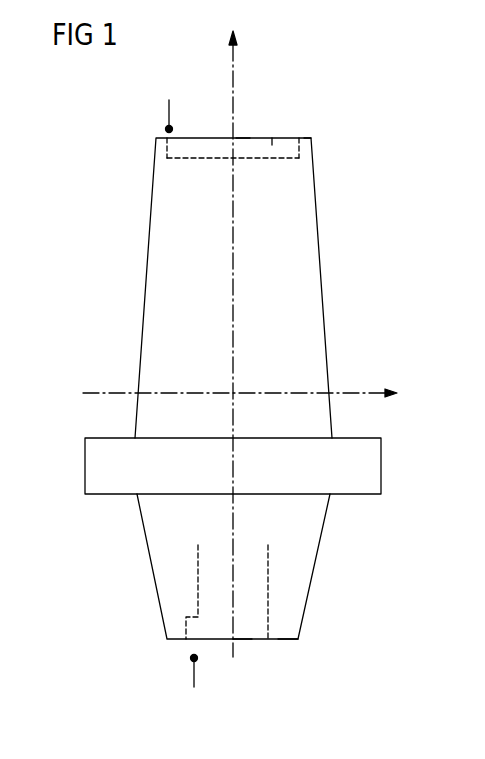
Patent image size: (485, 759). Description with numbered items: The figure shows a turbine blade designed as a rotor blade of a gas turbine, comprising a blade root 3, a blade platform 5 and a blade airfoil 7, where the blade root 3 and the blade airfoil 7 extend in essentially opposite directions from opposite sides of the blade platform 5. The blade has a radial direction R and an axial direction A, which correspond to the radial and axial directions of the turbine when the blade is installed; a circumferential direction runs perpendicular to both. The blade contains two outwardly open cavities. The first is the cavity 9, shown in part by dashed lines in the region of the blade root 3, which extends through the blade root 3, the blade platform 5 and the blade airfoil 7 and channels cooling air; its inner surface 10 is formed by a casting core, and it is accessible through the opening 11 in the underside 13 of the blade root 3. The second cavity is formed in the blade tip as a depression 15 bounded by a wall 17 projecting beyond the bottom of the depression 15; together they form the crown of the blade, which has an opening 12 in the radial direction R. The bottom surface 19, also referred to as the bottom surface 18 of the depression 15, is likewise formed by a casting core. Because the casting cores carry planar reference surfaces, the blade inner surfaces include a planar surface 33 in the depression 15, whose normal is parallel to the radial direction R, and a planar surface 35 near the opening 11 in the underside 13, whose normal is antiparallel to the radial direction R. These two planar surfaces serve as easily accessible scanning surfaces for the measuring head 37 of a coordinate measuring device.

The blade root 3 is at (300, 582).
The blade platform 5 is at (365, 472).
The blade airfoil 7 is at (302, 283).
The cavity 9 is at (225, 585).
The inner surface of the cooling air duct 10 is at (268, 612).
The opening 11 is at (243, 639).
The opening 12 is at (242, 138).
The underside of the blade root 13 is at (287, 639).
The depression 15 is at (272, 145).
The wall 17 is at (307, 138).
The bottom surface of the depression 18 is at (299, 148).
The bottom surface 19 is at (196, 158).
The planar surface 33 is at (172, 157).
The planar surface 35 is at (198, 617).
The measuring head 37 is at (169, 107).
The radial direction R is at (233, 62).
The axial direction A is at (370, 393).